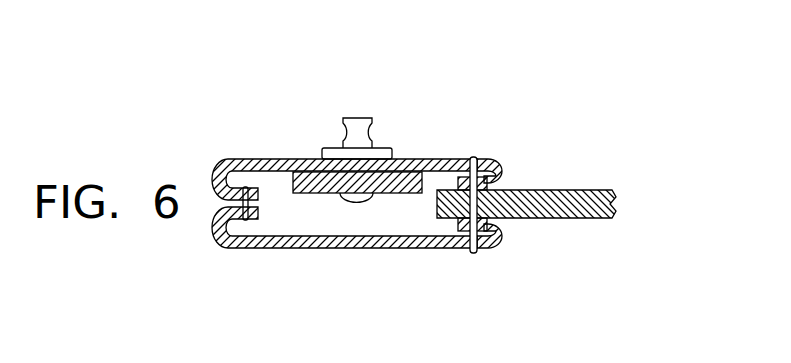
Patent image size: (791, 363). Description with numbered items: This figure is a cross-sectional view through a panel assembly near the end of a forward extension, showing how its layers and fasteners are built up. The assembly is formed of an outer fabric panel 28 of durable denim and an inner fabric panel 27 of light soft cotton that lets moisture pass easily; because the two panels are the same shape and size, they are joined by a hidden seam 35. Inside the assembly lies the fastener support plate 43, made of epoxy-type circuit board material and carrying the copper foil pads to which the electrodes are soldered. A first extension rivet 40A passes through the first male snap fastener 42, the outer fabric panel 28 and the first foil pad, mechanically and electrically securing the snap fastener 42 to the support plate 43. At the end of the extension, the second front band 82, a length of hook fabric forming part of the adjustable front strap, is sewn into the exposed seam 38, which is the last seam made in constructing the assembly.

The inner fabric panel 27 is at (428, 245).
The outer fabric panel 28 is at (428, 154).
The hidden seam 35 is at (294, 141).
The exposed seam 38 is at (428, 176).
The first extension rivet 40A is at (408, 242).
The first male snap fastener 42 is at (404, 88).
The fastener support plate 43 is at (428, 229).
The second front band 82 is at (468, 200).